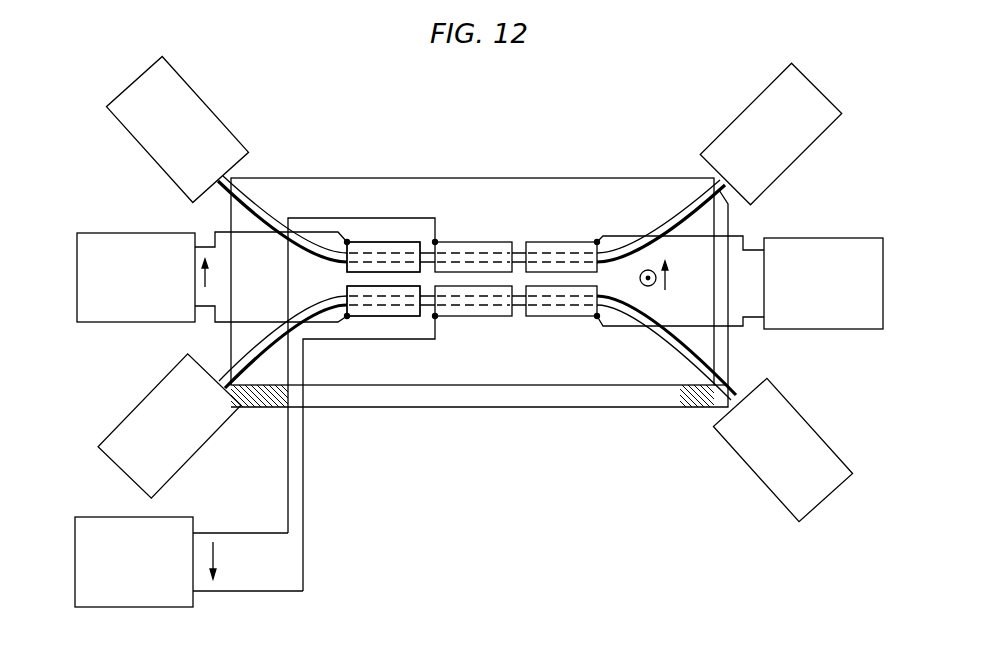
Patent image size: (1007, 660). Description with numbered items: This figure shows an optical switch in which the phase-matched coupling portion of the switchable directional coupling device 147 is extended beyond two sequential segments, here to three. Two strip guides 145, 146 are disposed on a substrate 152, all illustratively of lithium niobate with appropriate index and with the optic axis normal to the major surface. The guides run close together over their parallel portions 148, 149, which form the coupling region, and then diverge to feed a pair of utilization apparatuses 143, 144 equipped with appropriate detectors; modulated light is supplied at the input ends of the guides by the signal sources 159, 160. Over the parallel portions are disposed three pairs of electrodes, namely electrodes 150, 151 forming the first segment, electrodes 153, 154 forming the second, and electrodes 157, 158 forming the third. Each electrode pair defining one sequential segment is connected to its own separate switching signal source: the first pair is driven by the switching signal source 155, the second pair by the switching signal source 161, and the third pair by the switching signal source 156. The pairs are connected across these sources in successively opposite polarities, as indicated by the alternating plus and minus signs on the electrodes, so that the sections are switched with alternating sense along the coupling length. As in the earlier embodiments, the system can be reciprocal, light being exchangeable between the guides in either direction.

The utilization apparatus 143 is at (812, 144).
The utilization apparatus 144 is at (815, 425).
The strip guide 145 is at (247, 193).
The strip guide 146 is at (243, 362).
The switchable directional coupling device 147 is at (449, 384).
The parallel portion 148 is at (370, 253).
The parallel portion 149 is at (367, 293).
The electrode 150 is at (408, 242).
The electrode 151 is at (410, 317).
The substrate 152 is at (327, 397).
The electrode 153 is at (500, 247).
The electrode 154 is at (498, 316).
The switching signal source 155 is at (125, 233).
The switching signal source 156 is at (843, 238).
The electrode 157 is at (583, 247).
The electrode 158 is at (584, 316).
The source no. 1 159 is at (145, 150).
The source no. 2 160 is at (137, 405).
The switching signal source 161 is at (137, 607).